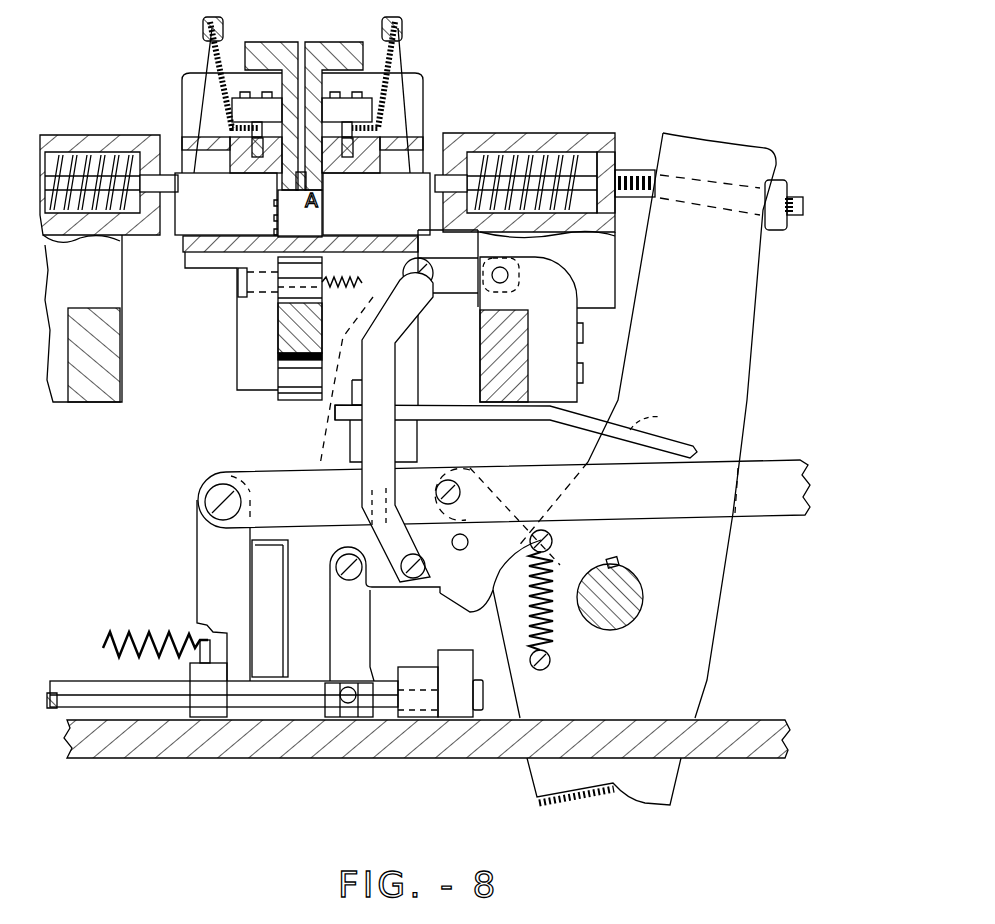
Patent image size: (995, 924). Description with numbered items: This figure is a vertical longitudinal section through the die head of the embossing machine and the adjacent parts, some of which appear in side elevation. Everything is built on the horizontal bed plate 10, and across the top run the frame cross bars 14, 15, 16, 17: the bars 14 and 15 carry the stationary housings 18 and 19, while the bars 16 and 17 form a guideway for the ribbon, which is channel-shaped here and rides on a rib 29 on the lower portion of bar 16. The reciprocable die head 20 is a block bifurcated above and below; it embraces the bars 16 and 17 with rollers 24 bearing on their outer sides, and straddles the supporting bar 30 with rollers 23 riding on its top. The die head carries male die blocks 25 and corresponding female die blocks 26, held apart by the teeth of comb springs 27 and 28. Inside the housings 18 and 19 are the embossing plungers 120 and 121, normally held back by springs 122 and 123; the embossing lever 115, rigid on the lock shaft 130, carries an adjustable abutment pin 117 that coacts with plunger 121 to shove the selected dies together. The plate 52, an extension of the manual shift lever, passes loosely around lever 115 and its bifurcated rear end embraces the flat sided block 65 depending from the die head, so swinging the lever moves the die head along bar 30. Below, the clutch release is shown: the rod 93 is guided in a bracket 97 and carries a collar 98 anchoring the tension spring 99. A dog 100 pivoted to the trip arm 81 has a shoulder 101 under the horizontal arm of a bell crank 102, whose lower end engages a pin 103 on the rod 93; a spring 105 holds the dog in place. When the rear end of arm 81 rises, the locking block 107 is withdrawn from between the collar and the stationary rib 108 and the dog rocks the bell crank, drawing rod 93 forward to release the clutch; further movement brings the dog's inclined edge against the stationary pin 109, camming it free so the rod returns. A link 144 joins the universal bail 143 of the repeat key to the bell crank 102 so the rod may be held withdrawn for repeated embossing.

The bed plate 10 is at (305, 745).
The cross bar 14 is at (112, 373).
The cross bar 15 is at (512, 345).
The cross bar 16 is at (298, 45).
The cross bar 17 is at (318, 45).
The stationary housing 18 is at (110, 113).
The stationary housing 19 is at (562, 140).
The die head 20 is at (185, 253).
The rollers 23 is at (280, 296).
The rollers 24 is at (275, 98).
The die blocks 25 is at (226, 204).
The die blocks 26 is at (376, 204).
The comb spring 27 is at (200, 100).
The comb spring 28 is at (407, 70).
The rib 29 is at (300, 192).
The supporting bar 30 is at (290, 327).
The plate 52 is at (493, 412).
The flat sided block 65 is at (410, 437).
The arm 81 is at (504, 494).
The rod 93 is at (97, 679).
The bracket 97 is at (440, 683).
The collar 98 is at (207, 718).
The tension spring 99 is at (170, 634).
The dog 100 is at (506, 556).
The shoulder 101 is at (405, 634).
The bell crank 102 is at (349, 632).
The pin 103 is at (357, 683).
The spring 105 is at (548, 573).
The block 107 is at (223, 590).
The stationary rib 108 is at (271, 608).
The stationary pin 109 is at (444, 537).
The embossing lever 115 is at (619, 469).
The adjustable abutment pin 117 is at (643, 172).
The embossing plunger 120 is at (172, 174).
The embossing plunger 121 is at (613, 167).
The spring 122 is at (67, 135).
The spring 123 is at (518, 152).
The lock shaft 130 is at (641, 590).
The universal bail 143 is at (449, 293).
The link 144 is at (385, 369).